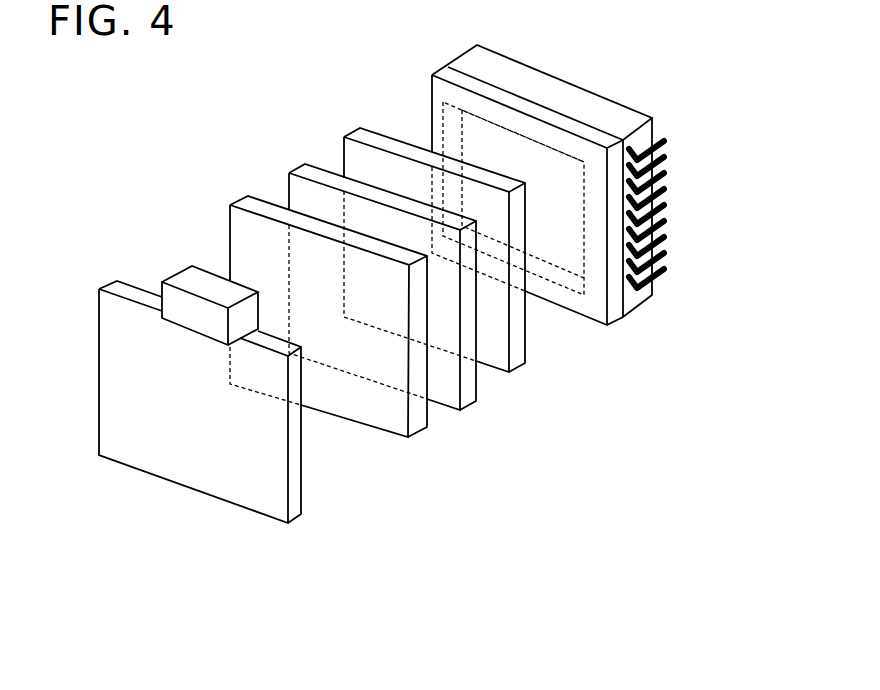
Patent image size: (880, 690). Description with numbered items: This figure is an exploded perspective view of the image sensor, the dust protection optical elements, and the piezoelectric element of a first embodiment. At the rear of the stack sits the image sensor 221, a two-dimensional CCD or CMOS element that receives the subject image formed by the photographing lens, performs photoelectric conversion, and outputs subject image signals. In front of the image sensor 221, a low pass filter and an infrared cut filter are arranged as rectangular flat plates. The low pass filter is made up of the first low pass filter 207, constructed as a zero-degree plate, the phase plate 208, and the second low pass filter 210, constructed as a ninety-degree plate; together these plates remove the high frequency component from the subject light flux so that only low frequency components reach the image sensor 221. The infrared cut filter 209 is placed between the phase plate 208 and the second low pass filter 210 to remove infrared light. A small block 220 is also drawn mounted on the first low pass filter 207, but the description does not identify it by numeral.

The first low pass filter 207 is at (289, 525).
The phase plate 208 is at (412, 438).
The infrared cut filter 209 is at (467, 411).
The second low pass filter 210 is at (513, 374).
The light source unit 220 is at (161, 296).
The image sensor 221 is at (620, 326).